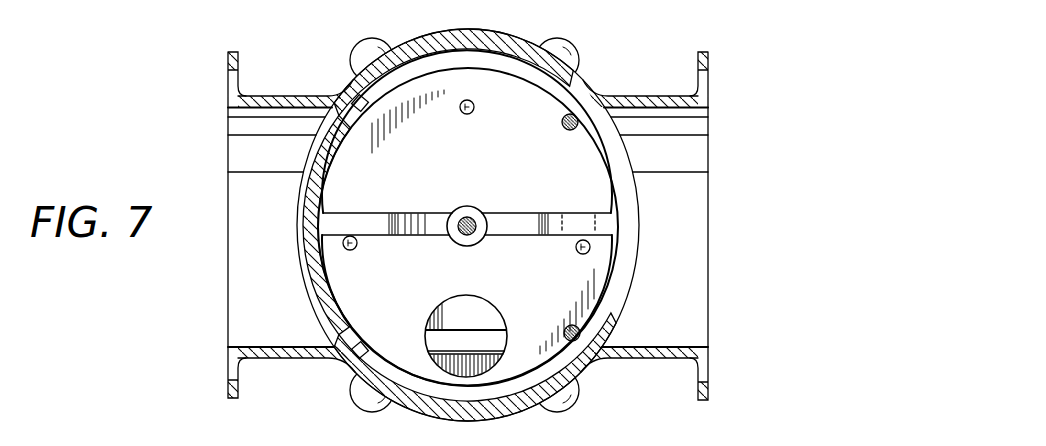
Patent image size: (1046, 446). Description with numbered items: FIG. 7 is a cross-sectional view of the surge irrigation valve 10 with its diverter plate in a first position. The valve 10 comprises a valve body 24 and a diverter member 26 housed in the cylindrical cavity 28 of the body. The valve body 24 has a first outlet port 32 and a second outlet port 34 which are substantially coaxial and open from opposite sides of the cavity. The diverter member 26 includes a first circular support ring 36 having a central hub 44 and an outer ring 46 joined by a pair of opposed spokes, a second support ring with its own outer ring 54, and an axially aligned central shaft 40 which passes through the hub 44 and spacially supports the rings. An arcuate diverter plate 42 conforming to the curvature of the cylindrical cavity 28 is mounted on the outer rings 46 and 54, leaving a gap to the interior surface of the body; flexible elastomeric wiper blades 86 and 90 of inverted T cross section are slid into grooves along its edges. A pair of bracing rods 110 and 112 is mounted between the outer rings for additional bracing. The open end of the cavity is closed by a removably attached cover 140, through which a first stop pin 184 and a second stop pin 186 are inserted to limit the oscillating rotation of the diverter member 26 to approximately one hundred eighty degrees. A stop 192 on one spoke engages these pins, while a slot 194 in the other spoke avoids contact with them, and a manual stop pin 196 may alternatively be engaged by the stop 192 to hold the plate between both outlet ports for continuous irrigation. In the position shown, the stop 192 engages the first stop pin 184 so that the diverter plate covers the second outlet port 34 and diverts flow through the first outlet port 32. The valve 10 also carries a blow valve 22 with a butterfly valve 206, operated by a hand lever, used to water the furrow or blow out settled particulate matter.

The surge irrigation valve 10 is at (190, 143).
The blow valve 22 is at (478, 318).
The valve body 24 is at (345, 84).
The diverter member 26 is at (552, 107).
The cylindrical cavity 28 is at (578, 176).
The first outlet port 32 is at (698, 322).
The second outlet port 34 is at (228, 316).
The first circular support ring 36 is at (600, 293).
The axially aligned central shaft 40 is at (473, 236).
The arcuate diverter plate 42 is at (297, 215).
The central hub 44 is at (489, 203).
The outer ring 46 is at (598, 318).
The outer ring 54 is at (626, 262).
The wiper blade 86 is at (363, 344).
The wiper blade 90 is at (365, 110).
The bracing rod 110 is at (566, 326).
The bracing rod 112 is at (565, 129).
The cover 140 is at (590, 196).
The first stop pin 184 is at (355, 249).
The second stop pin 186 is at (576, 248).
The stop 192 is at (364, 213).
The slot 194 is at (572, 226).
The manual stop pin 196 is at (474, 112).
The butterfly valve 206 is at (447, 308).